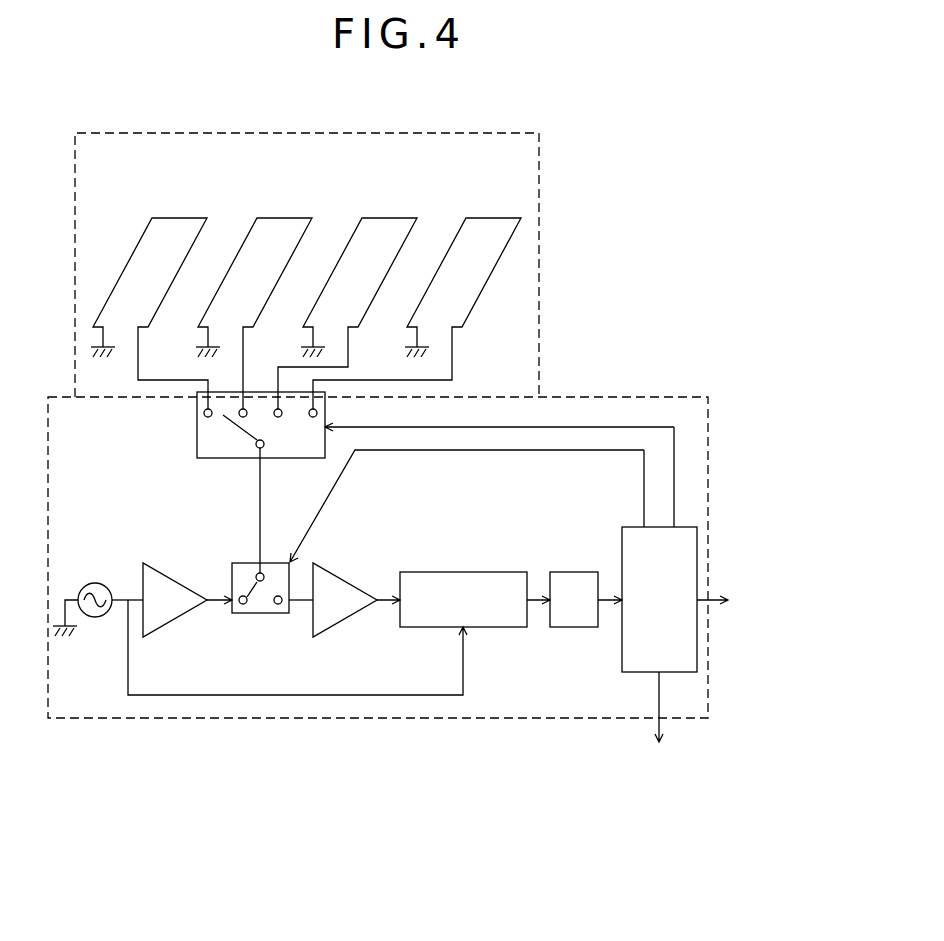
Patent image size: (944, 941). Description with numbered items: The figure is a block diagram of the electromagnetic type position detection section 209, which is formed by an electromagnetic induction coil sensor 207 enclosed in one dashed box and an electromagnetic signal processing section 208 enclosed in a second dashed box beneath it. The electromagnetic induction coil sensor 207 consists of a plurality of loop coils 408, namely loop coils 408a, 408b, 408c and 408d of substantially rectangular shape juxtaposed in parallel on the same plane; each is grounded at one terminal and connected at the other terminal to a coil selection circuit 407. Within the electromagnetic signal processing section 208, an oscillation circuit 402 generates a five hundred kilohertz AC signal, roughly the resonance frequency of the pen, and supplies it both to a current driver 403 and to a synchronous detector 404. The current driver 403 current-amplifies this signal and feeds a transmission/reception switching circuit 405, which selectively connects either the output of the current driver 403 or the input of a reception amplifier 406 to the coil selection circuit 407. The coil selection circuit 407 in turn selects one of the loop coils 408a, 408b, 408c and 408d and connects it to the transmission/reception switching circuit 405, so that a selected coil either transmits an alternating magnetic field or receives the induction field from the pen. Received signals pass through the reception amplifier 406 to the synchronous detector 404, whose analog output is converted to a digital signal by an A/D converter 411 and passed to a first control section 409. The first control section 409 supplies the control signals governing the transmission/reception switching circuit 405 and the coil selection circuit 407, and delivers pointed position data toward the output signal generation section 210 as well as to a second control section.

The electromagnetic induction coil sensor 207 is at (462, 133).
The electromagnetic signal processing section 208 is at (652, 396).
The electromagnetic type position detection section 209 is at (406, 787).
The output signal generation section 210 is at (732, 600).
The oscillation circuit 402 is at (95, 618).
The current driver 403 is at (167, 625).
The synchronous detector 404 is at (430, 628).
The transmission/reception switching circuit 405 is at (260, 615).
The reception amplifier 406 is at (337, 625).
The coil selection circuit 407 is at (197, 436).
The loop coils 408 is at (532, 181).
The loop coil 408a is at (178, 217).
The loop coil 408b is at (283, 217).
The loop coil 408c is at (387, 217).
The loop coil 408d is at (491, 217).
The first control section 409 is at (633, 673).
The A/D converter 411 is at (570, 628).